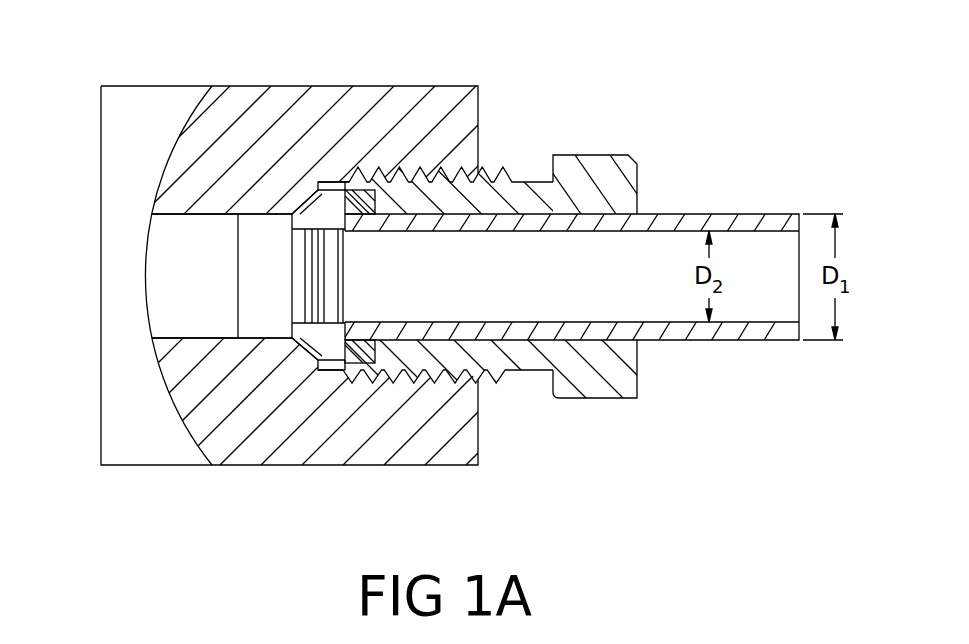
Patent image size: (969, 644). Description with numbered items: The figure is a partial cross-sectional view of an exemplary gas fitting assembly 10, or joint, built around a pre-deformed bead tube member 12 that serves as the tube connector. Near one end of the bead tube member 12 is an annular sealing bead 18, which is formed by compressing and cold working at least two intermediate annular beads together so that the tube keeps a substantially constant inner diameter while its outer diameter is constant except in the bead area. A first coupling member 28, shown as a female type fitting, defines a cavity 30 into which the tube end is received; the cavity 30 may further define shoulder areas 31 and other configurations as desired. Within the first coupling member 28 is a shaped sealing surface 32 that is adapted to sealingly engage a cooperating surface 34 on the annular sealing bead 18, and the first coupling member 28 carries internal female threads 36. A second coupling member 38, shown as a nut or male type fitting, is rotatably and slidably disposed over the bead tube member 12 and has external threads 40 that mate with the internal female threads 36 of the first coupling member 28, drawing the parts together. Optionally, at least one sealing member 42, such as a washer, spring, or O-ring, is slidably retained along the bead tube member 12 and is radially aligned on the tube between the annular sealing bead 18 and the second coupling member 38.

The gas fitting assembly 10 is at (616, 474).
The bead tube member 12 is at (748, 214).
The annular sealing bead 18 is at (332, 186).
The first coupling member 28 is at (259, 112).
The cavity 30 is at (264, 335).
The shoulder areas 31 is at (210, 216).
The shaped sealing surface 32 is at (228, 104).
The cooperating surface 34 is at (304, 338).
The internal female threads 36 is at (358, 184).
The second coupling member 38 is at (585, 163).
The external threads 40 is at (486, 180).
The sealing member 42 is at (362, 375).